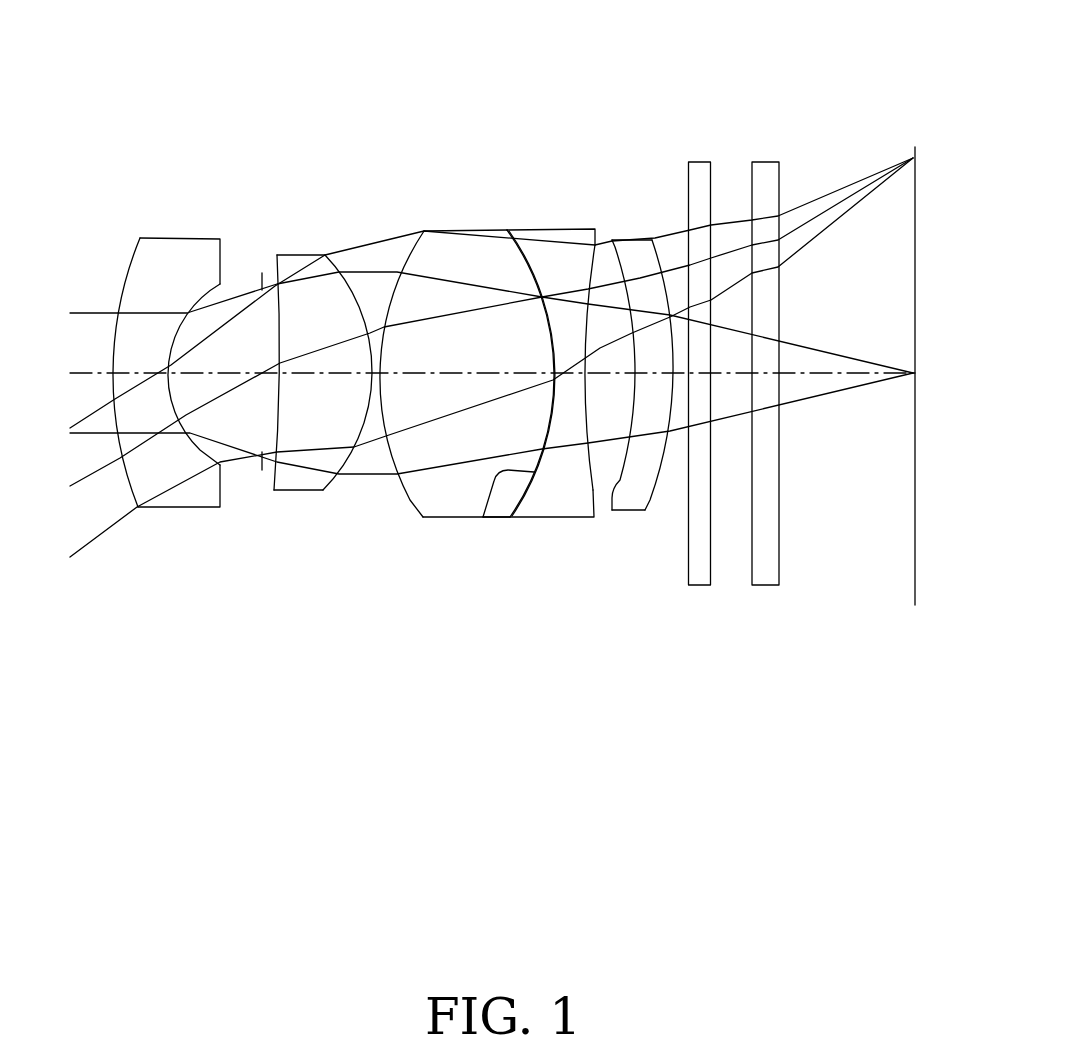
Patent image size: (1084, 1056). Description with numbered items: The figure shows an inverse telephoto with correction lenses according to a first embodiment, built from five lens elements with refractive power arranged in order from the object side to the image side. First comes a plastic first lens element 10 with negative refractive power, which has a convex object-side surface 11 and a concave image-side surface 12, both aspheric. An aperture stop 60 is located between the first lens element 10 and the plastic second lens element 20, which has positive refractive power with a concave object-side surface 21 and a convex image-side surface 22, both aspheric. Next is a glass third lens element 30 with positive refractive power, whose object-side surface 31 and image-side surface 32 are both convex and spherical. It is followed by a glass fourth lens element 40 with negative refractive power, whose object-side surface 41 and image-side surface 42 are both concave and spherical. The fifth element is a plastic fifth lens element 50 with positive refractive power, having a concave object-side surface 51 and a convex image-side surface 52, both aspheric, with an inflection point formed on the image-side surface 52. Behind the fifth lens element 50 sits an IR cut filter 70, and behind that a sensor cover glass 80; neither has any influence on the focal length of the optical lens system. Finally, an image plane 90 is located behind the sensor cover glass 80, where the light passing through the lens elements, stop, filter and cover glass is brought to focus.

The first lens element 10 is at (145, 408).
The object-side surface 11 is at (121, 504).
The image-side surface 12 is at (200, 464).
The second lens element 20 is at (299, 399).
The object-side surface 21 is at (270, 500).
The image-side surface 22 is at (351, 467).
The third lens element 30 is at (467, 402).
The object-side surface 31 is at (410, 509).
The image-side surface 32 is at (520, 485).
The fourth lens element 40 is at (539, 394).
The object-side surface 41 is at (524, 509).
The image-side surface 42 is at (587, 492).
The fifth lens element 50 is at (651, 397).
The object-side surface 51 is at (623, 495).
The image-side surface 52 is at (662, 489).
The aperture stop 60 is at (250, 261).
The IR cut filter 70 is at (698, 170).
The sensor cover glass 80 is at (763, 170).
The image plane 90 is at (910, 138).